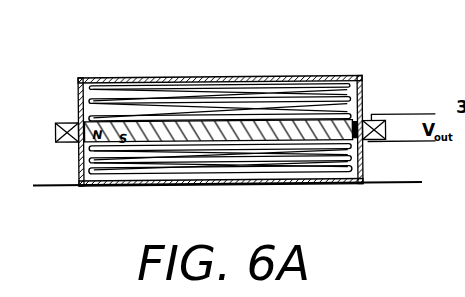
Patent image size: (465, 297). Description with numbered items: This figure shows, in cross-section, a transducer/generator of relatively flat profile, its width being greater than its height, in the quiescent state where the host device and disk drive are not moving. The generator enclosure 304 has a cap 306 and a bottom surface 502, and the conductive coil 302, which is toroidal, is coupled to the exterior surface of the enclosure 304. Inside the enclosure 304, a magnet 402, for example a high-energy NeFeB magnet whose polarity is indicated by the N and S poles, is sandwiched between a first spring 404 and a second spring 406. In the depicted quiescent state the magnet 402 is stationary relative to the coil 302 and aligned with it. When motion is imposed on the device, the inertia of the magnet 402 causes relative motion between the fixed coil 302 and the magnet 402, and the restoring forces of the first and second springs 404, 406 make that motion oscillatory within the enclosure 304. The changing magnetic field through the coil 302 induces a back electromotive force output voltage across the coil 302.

The conductive coil 302 is at (56, 132).
The generator enclosure 304 is at (78, 110).
The cap 306 is at (125, 79).
The magnet 402 is at (363, 117).
The first spring 404 is at (330, 90).
The second spring 406 is at (323, 184).
The bottom surface of the enclosure 502 is at (362, 182).